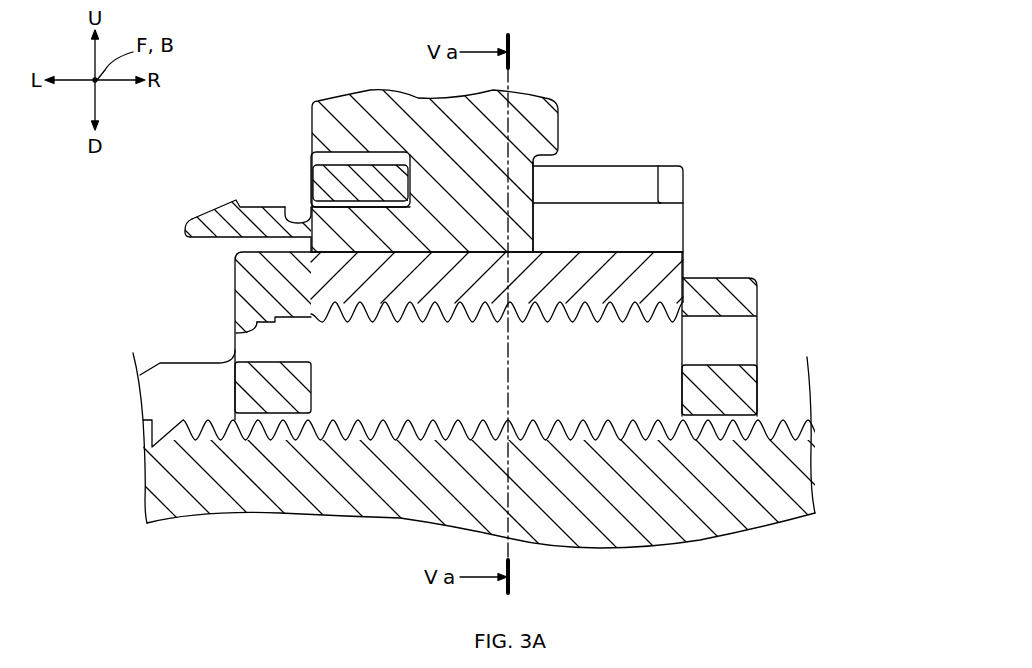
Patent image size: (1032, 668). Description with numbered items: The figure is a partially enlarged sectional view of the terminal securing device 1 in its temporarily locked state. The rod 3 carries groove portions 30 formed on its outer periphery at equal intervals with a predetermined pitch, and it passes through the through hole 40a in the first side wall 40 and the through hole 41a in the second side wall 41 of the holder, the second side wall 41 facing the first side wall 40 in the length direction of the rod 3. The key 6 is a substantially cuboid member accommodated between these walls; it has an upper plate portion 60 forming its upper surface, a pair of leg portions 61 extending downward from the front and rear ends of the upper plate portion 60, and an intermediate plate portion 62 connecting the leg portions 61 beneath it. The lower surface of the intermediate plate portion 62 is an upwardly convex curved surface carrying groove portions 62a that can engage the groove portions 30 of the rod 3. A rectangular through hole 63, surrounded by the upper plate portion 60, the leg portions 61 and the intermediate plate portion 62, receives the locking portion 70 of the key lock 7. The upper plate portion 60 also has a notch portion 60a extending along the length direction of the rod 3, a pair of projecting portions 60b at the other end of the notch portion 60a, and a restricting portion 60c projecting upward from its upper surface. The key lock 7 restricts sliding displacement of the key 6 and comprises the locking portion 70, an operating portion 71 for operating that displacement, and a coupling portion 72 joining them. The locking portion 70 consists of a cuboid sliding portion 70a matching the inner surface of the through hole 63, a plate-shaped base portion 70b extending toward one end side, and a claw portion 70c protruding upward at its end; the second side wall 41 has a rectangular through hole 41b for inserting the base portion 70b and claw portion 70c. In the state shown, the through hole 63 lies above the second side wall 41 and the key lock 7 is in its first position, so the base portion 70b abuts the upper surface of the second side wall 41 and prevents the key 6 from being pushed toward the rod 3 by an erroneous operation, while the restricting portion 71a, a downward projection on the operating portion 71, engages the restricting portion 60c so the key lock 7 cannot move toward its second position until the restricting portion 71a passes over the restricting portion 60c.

The apparatus 1 is at (853, 80).
The rod 3 is at (628, 540).
The groove portions 30 is at (542, 422).
The first side wall 40 is at (748, 298).
The through hole 40a is at (762, 428).
The second side wall 41 is at (247, 283).
The through hole 41a is at (226, 426).
The through hole 41b is at (240, 328).
The key 6 is at (703, 143).
The upper plate portion 60 is at (586, 166).
The notch portion 60a is at (625, 187).
The projecting portions 60b is at (670, 183).
The restricting portion 60c is at (352, 157).
The leg portions 61 is at (667, 226).
The intermediate plate portion 62 is at (672, 265).
The groove portions 62a is at (480, 322).
The through hole 63 is at (284, 207).
The key lock 7 is at (316, 84).
The locking portion 70 is at (120, 168).
The sliding portion 70a is at (531, 222).
The base portion 70b is at (260, 205).
The claw portion 70c is at (202, 218).
The operating portion 71 is at (417, 107).
The restricting portion 71a is at (316, 160).
The coupling portion 72 is at (540, 180).